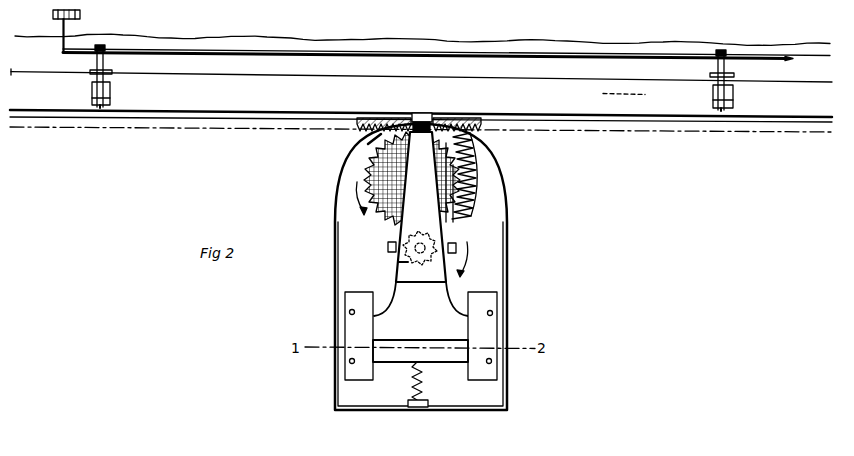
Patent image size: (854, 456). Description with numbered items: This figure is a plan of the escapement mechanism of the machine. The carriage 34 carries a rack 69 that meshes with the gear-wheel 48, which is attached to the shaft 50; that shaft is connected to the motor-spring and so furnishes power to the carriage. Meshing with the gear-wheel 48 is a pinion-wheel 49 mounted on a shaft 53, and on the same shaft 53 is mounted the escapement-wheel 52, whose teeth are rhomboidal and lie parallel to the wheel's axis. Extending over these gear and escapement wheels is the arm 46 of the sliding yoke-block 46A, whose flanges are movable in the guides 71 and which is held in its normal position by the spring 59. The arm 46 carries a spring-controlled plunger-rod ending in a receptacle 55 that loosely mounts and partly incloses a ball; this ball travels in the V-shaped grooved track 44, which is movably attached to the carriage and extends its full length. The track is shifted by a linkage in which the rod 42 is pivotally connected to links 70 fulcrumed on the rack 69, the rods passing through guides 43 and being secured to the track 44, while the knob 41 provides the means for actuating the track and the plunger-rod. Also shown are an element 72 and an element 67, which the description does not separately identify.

The knob 41 is at (80, 15).
The rod 42 is at (62, 42).
The guides 43 is at (112, 93).
The links 70 is at (95, 75).
The guide rail 72 is at (472, 54).
The carriage 34 is at (421, 64).
The rack 69 is at (330, 148).
The receptacle 55 is at (431, 116).
The V-shaped grooved track 44 is at (495, 115).
The arm 46 is at (412, 224).
The gear-wheel 48 is at (473, 172).
The shaft 50 is at (420, 229).
The escapement-wheel 52 is at (388, 247).
The shaft 53 is at (415, 253).
The pinion-wheel 49 is at (440, 253).
The casing 67 is at (508, 252).
The guides 71 is at (421, 336).
The yoke-block 46A is at (395, 365).
The spring 59 is at (424, 382).